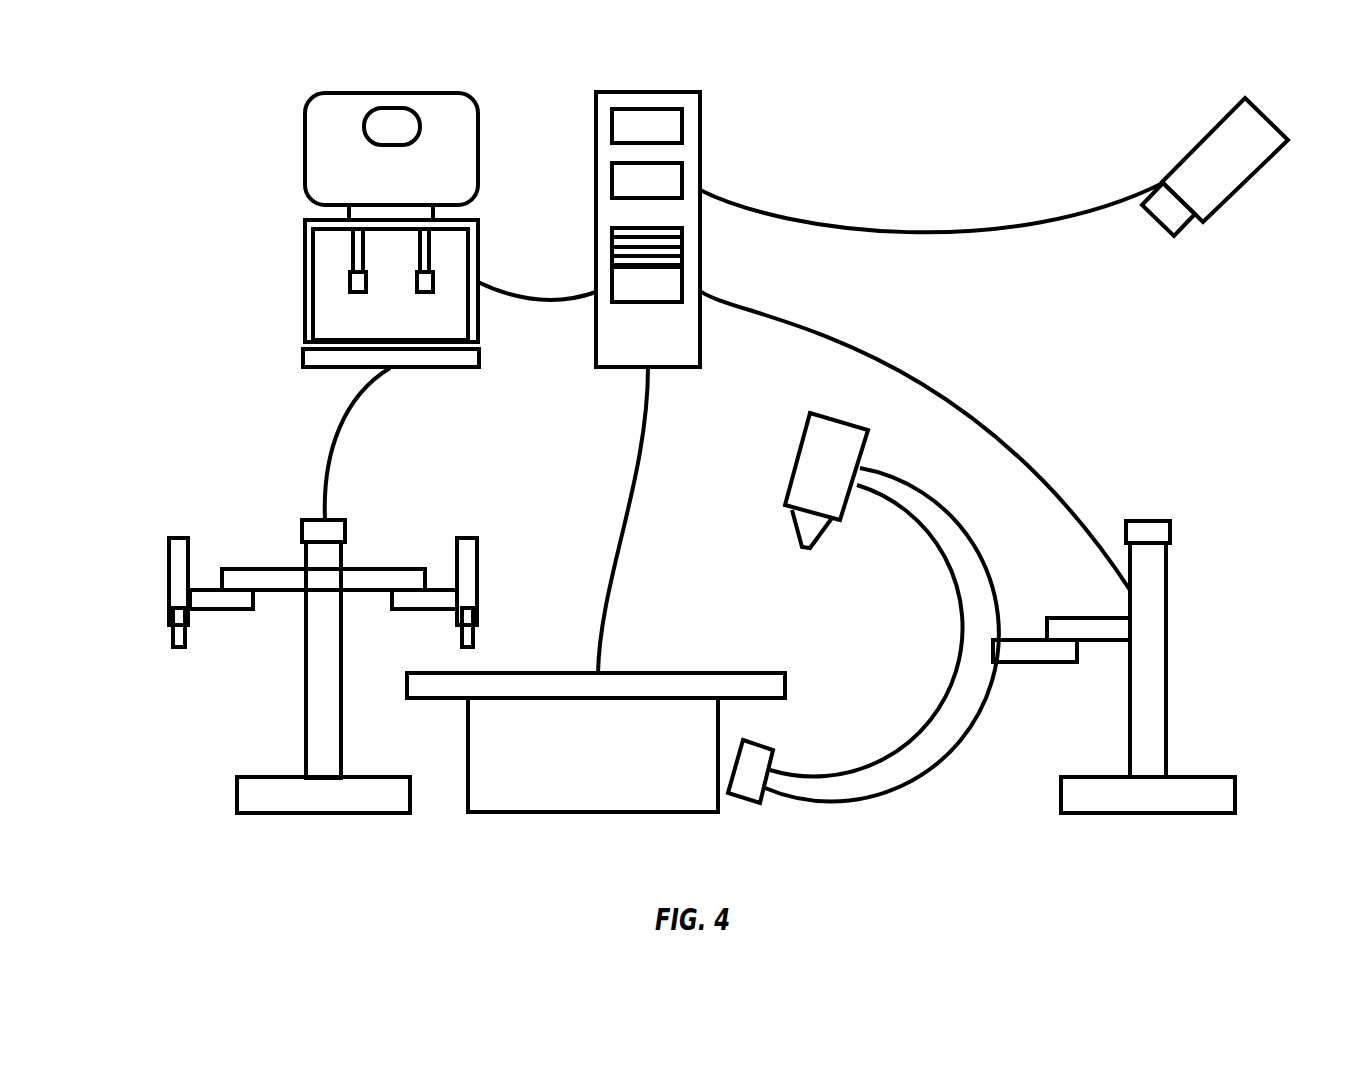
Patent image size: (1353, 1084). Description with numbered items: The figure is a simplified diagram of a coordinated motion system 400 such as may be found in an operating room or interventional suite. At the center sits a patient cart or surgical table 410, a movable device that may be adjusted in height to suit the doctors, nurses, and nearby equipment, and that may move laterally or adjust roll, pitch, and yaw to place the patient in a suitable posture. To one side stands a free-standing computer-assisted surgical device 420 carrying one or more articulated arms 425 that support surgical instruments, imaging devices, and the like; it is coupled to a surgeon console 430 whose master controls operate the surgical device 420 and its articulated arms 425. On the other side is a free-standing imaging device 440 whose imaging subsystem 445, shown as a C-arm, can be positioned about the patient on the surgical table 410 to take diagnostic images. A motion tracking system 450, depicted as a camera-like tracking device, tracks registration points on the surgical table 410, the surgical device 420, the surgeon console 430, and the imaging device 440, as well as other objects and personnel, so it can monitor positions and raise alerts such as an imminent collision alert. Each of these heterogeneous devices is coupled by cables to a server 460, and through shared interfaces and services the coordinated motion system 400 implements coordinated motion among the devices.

The coordinated motion system 400 is at (994, 196).
The surgical table 410 is at (548, 813).
The computer-assisted surgical device 420 is at (305, 675).
The articulated arms 425 is at (168, 560).
The surgeon console 430 is at (303, 275).
The imaging device 440 is at (1168, 640).
The imaging subsystem 445 is at (970, 670).
The motion tracking system 450 is at (1203, 223).
The server 460 is at (702, 148).